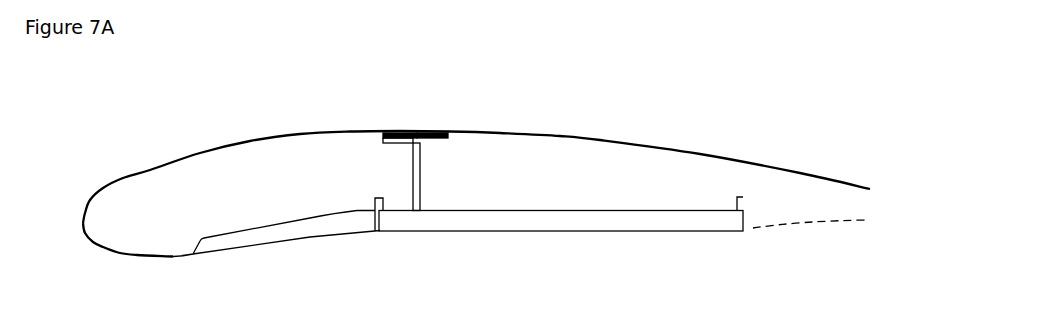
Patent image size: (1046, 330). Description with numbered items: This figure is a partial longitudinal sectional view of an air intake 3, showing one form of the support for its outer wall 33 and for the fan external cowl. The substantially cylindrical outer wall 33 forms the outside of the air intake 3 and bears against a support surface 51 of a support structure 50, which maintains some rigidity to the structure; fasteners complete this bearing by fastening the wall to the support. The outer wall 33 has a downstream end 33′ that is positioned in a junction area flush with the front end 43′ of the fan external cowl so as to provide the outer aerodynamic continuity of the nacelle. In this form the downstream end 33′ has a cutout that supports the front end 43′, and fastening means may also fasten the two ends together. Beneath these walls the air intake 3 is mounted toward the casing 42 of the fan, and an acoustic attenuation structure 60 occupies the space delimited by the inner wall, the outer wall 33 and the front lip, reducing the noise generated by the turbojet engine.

The air intake 3 is at (211, 133).
The outer wall 33 is at (162, 162).
The downstream end of the outer wall 33′ is at (398, 132).
The front end of the fan external cowl 43′ is at (438, 132).
The support surface 51 is at (397, 143).
The support structure 50 is at (420, 177).
The casing of the fan 42 is at (560, 218).
The acoustic attenuation structure 60 is at (271, 228).